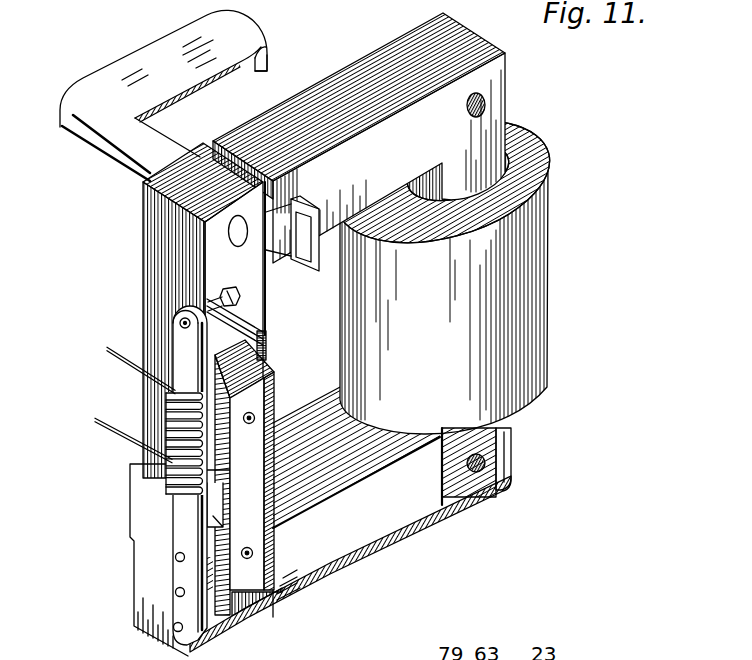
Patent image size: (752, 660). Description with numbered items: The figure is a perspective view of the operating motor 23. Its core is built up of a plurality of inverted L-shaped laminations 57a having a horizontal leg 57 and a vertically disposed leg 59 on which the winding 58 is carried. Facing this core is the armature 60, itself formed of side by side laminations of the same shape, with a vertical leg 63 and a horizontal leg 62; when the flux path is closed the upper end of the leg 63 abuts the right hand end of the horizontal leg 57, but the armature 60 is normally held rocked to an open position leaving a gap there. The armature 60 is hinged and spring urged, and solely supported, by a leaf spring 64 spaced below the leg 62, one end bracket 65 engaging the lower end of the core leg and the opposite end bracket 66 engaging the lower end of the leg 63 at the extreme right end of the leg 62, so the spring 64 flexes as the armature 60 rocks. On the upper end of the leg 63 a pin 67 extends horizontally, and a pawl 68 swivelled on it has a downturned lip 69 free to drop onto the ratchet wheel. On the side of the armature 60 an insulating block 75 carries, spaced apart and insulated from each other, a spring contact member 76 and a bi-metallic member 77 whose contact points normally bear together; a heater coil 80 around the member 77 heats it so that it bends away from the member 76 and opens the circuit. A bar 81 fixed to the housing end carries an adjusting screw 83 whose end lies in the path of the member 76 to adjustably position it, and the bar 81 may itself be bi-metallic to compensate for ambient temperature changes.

The mounting bracket plate 68 is at (155, 49).
The downturned lip 69 is at (262, 74).
The core laminations 57a is at (352, 70).
The horizontal leg 57 is at (359, 138).
The vertically disposed leg 59 is at (505, 124).
The motor 23 is at (462, 263).
The winding 58 is at (536, 267).
The vertical leg 63 is at (155, 220).
The armature 60 is at (199, 310).
The pin 67 is at (230, 243).
The adjusting screw 83 is at (238, 293).
The bar 81 is at (267, 342).
The heater coil 80 is at (173, 418).
The insulating block 75 is at (261, 478).
The spring contact member 76 is at (210, 500).
The bi-metallic member 77 is at (182, 510).
The end bracket 66 is at (144, 577).
The horizontal leg 62 is at (357, 547).
The leaf spring 64 is at (421, 523).
The end bracket 65 is at (511, 443).